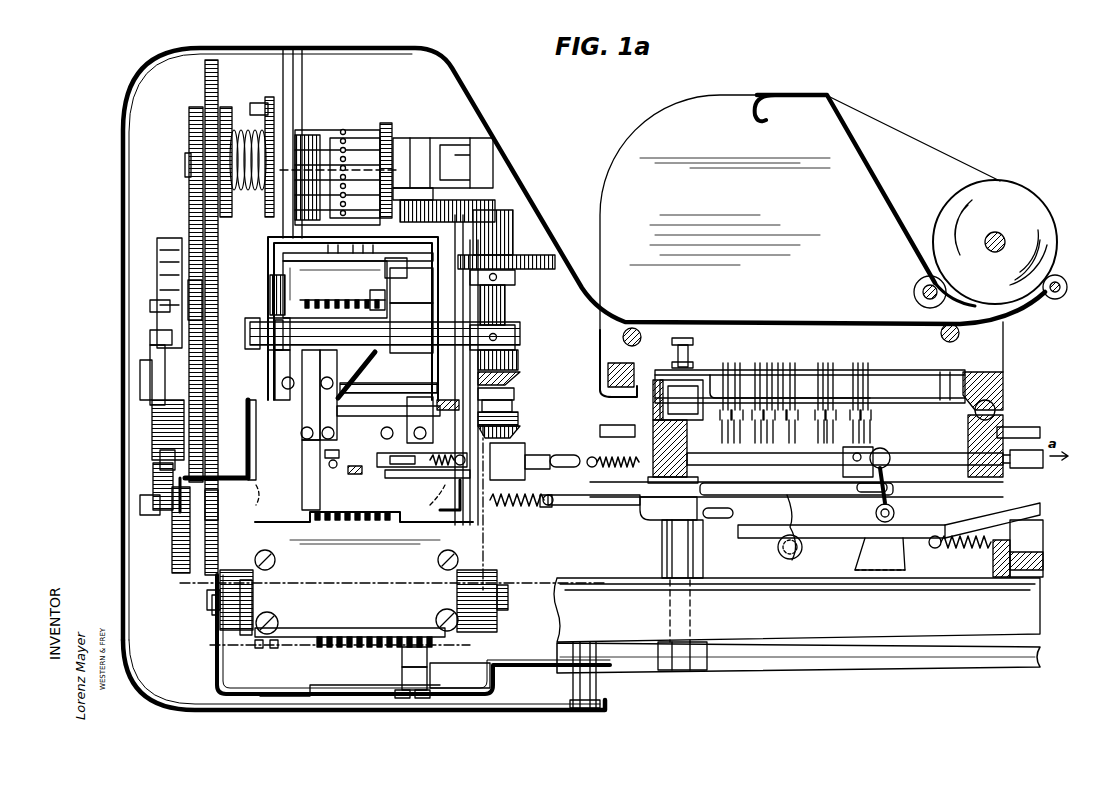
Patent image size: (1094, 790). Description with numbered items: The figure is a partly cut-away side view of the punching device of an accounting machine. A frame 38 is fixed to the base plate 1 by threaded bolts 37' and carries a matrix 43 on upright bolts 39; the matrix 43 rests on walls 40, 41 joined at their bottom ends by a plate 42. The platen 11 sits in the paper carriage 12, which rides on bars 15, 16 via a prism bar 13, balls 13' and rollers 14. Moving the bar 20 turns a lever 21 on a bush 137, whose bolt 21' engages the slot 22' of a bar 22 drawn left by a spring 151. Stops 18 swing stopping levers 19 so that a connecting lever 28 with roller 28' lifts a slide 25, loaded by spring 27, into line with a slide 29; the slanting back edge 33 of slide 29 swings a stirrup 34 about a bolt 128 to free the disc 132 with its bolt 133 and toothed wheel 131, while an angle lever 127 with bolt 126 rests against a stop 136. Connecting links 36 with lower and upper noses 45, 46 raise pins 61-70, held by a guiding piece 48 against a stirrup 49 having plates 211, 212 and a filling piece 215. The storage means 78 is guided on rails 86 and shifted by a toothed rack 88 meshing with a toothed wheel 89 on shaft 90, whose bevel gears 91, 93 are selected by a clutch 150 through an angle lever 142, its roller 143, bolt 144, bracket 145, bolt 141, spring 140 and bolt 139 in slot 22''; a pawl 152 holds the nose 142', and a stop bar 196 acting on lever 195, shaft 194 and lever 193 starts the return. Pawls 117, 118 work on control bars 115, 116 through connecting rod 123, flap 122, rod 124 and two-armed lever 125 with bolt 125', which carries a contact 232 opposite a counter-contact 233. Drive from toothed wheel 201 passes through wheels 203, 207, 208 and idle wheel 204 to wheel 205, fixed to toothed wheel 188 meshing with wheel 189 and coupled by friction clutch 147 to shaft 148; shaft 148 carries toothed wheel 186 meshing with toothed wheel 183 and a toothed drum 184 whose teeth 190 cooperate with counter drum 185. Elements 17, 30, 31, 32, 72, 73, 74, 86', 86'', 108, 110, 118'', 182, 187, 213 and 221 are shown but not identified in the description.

The base plate 1 is at (1030, 545).
The platen 11 is at (1000, 185).
The paper carriage 12 is at (672, 118).
The prism bar 13 is at (1000, 385).
The balls 13' is at (1005, 400).
The rollers 14 is at (672, 372).
The bar 15 is at (1003, 413).
The bar 16 is at (655, 400).
The type bar guide plate 17 is at (895, 395).
The stops 18 is at (740, 370).
The stopping lever 19 is at (790, 400).
The bar 20 is at (1010, 470).
The rotatable lever 21 is at (867, 502).
The bolt 21' is at (900, 494).
The bar 22 is at (796, 503).
The longitudinal slot 22' is at (809, 527).
The longitudinal slot 22'' is at (426, 489).
The slide 25 is at (855, 545).
The spring 27 is at (965, 550).
The connecting lever 28 is at (800, 550).
The roller 28' is at (772, 552).
The slide 29 is at (640, 505).
The slot 30 is at (705, 518).
The slot 31 is at (563, 455).
The spring 32 is at (628, 455).
The slanting back edge 33 is at (530, 468).
The stirrup 34 is at (165, 460).
The connecting links 36 is at (915, 668).
The threaded bolts 37' is at (691, 595).
The frame 38 is at (775, 645).
The upright bolts 39 is at (493, 218).
The wall 40 is at (445, 218).
The wall 41 is at (258, 450).
The plate 42 is at (290, 642).
The matrix 43 is at (420, 140).
The lower nose 45 is at (402, 677).
The upper nose 46 is at (402, 655).
The guiding piece 48 is at (425, 625).
The stirrup 49 is at (285, 712).
The vertically movable pins 61-70 is at (355, 637).
The gear 72 is at (215, 610).
The gear 73 is at (242, 638).
The collar 74 is at (218, 622).
The storage means 78 is at (400, 262).
The rails 86 is at (366, 309).
The bearing 86' is at (250, 320).
The bearing 86'' is at (475, 307).
The toothed rack 88 is at (397, 268).
The toothed wheel 89 is at (555, 262).
The shaft 90 is at (508, 300).
The bevel gear 91 is at (520, 377).
The bevel gear 93 is at (520, 432).
The bar 108 is at (160, 245).
The shaft 110 is at (175, 240).
The control bar 115 is at (335, 289).
The control bar 116 is at (375, 292).
The pawl 117 is at (276, 380).
The pawl 118 is at (411, 285).
The gear 118'' is at (411, 328).
The flap 122 is at (382, 333).
The connecting rod 123 is at (320, 485).
The rod 124 is at (320, 425).
The two-armed lever 125 is at (407, 459).
The bolt 125' is at (346, 481).
The bolt 126 is at (305, 522).
The angle lever 127 is at (150, 510).
The bolt 128 is at (258, 490).
The toothed wheel 131 is at (150, 362).
The disc 132 is at (155, 352).
The bolt 133 is at (155, 425).
The irremovable stop 136 is at (165, 512).
The bush 137 is at (860, 447).
The bolt 139 is at (507, 461).
The spring 140 is at (440, 467).
The bolt 141 is at (427, 500).
The angle lever 142 is at (519, 411).
The nose 142' is at (433, 400).
The roller 143 is at (512, 405).
The bolt 144 is at (426, 432).
The rigid bracket 145 is at (400, 467).
The friction clutch 147 is at (200, 125).
The shaft 148 is at (186, 160).
The clutch 150 is at (514, 392).
The spring 151 is at (540, 508).
The pawl 152 is at (500, 380).
The shaft 182 is at (260, 103).
The toothed wheel 183 is at (272, 110).
The toothed drum 184 is at (320, 130).
The counter drum 185 is at (355, 178).
The toothed wheel 186 is at (299, 177).
The spring 187 is at (240, 120).
The toothed wheel 188 is at (386, 123).
The wheel 189 is at (410, 205).
The teeth 190 is at (343, 130).
The lever 193 is at (345, 395).
The shaft 194 is at (388, 397).
The lever 195 is at (300, 370).
The stop bar 196 is at (340, 310).
The toothed wheel 201 is at (182, 310).
The wheel 203 is at (175, 340).
The idle wheel 204 is at (200, 285).
The wheel 205 is at (211, 60).
The wheel 207 is at (180, 575).
The wheel 208 is at (212, 515).
The plate 211 is at (330, 690).
The plate 212 is at (420, 700).
The bracket 213 is at (440, 682).
The filling piece 215 is at (400, 700).
The cylinder 221 is at (605, 425).
The movable contact 232 is at (325, 454).
The firm counter-contact 233 is at (329, 464).